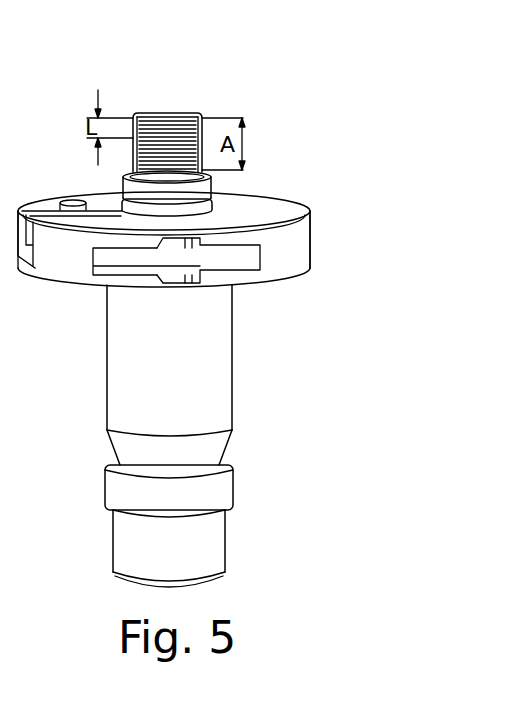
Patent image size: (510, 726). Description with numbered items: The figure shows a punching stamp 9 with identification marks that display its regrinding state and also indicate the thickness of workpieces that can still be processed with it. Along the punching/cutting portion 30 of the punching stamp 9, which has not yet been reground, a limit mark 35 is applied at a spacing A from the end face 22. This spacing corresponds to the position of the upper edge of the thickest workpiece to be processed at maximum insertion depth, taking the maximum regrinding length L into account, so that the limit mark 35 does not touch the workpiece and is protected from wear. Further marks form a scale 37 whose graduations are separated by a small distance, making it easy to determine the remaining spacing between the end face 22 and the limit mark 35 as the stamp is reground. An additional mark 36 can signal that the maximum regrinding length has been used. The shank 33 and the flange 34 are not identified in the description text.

The punching stamp 9 is at (257, 93).
The end face 22 is at (181, 112).
The punching/cutting portion 30 is at (134, 130).
The cylindrical body 33 is at (138, 322).
The disc-shaped flange 34 is at (290, 250).
The limit mark 35 is at (140, 162).
The additional mark 36 is at (155, 137).
The scale 37 is at (133, 152).